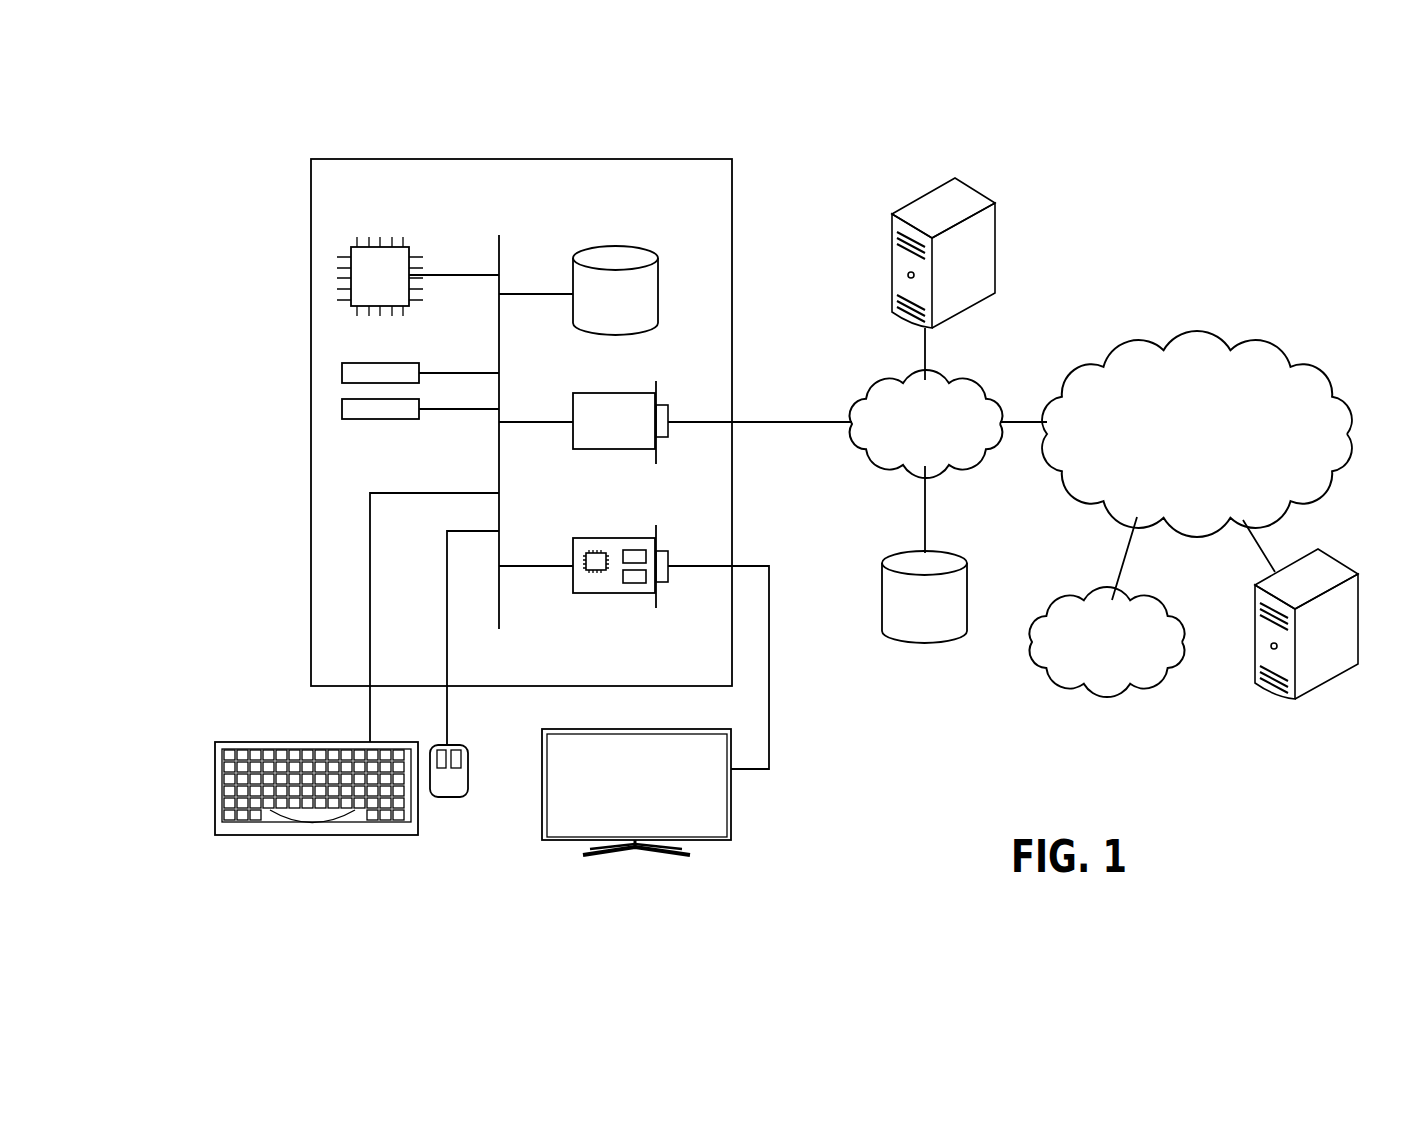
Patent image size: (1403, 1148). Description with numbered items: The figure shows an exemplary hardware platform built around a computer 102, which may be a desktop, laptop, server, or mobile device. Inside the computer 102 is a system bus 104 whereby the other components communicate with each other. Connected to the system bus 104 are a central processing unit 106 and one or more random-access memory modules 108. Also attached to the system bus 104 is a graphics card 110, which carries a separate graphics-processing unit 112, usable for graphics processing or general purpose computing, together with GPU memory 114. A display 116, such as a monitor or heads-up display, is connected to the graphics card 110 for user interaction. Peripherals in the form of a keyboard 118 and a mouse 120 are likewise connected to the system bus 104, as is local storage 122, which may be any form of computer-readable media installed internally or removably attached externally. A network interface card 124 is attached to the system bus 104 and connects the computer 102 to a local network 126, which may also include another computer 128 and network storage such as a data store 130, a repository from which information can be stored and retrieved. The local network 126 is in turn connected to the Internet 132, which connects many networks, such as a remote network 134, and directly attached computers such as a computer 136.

The computer 102 is at (685, 159).
The system bus 104 is at (500, 247).
The central processing unit 106 is at (404, 247).
The random-access memory modules 108 is at (419, 370).
The graphics card 110 is at (634, 630).
The graphics-processing unit 112 is at (595, 565).
The GPU memory 114 is at (632, 583).
The display 116 is at (731, 822).
The keyboard 118 is at (318, 838).
The mouse 120 is at (447, 797).
The local storage 122 is at (660, 275).
The network interface card 124 is at (573, 396).
The local network 126 is at (982, 383).
The computer 128 is at (975, 190).
The data store 130 is at (960, 557).
The Internet 132 is at (1243, 343).
The remote network 134 is at (1163, 598).
The computer 136 is at (1335, 560).